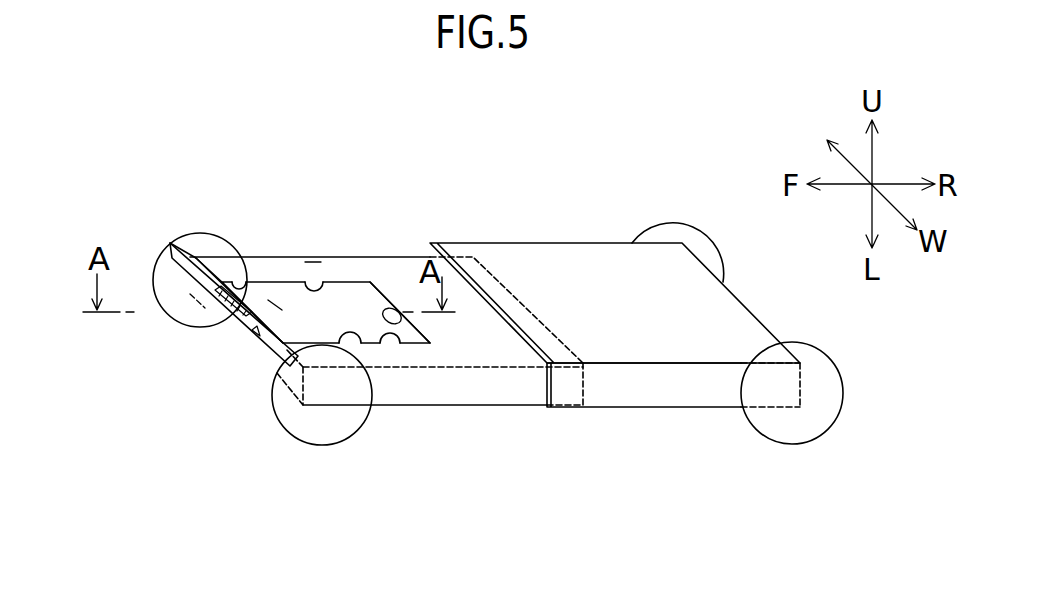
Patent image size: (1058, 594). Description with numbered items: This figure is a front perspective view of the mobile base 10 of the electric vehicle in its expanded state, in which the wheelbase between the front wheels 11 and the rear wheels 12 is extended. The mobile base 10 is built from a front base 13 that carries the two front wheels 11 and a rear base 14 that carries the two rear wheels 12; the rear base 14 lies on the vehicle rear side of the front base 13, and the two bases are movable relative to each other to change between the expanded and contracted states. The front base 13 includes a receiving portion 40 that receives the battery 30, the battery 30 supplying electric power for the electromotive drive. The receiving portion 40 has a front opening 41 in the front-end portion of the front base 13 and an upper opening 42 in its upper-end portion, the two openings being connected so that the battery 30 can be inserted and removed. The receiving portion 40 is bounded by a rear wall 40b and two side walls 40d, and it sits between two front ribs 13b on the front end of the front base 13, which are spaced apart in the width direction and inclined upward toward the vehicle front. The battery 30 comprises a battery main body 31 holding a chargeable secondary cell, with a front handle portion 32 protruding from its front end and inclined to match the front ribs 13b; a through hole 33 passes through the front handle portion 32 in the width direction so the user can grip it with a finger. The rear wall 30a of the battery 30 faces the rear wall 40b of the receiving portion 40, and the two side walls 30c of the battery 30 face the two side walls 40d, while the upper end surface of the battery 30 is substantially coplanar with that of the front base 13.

The mobile base 10 is at (479, 220).
The front wheels 11 is at (175, 238).
The rear wheels 12 is at (690, 224).
The front base 13 is at (313, 268).
The front ribs 13b is at (165, 246).
The rear base 14 is at (557, 263).
The battery 30 is at (343, 301).
The rear wall of the battery 30a is at (372, 282).
The side walls of the battery 30c is at (275, 305).
The battery main body 31 is at (238, 290).
The front handle portion 32 is at (232, 328).
The through hole 33 is at (198, 308).
The receiving portion 40 is at (380, 343).
The rear wall of the receiving portion 40b is at (402, 320).
The side walls of the receiving portion 40d is at (322, 284).
The front opening 41 is at (243, 340).
The upper opening 42 is at (222, 288).